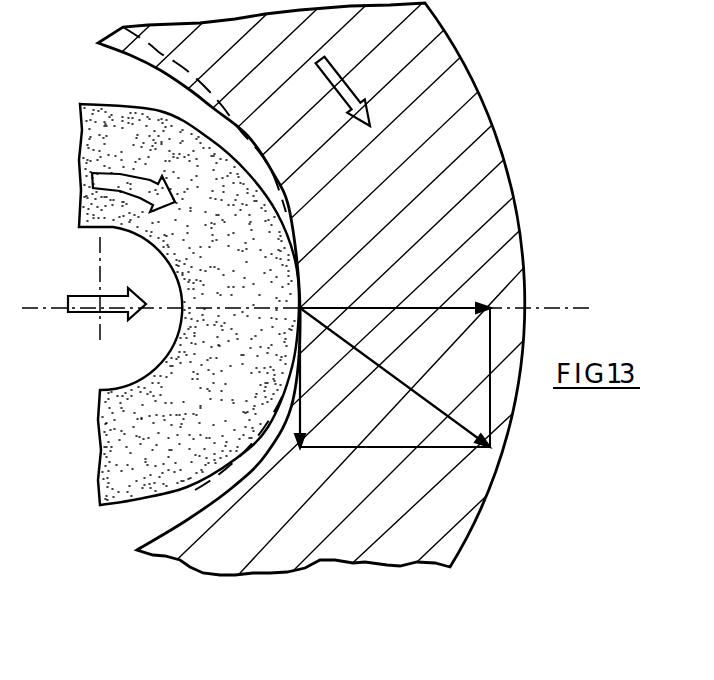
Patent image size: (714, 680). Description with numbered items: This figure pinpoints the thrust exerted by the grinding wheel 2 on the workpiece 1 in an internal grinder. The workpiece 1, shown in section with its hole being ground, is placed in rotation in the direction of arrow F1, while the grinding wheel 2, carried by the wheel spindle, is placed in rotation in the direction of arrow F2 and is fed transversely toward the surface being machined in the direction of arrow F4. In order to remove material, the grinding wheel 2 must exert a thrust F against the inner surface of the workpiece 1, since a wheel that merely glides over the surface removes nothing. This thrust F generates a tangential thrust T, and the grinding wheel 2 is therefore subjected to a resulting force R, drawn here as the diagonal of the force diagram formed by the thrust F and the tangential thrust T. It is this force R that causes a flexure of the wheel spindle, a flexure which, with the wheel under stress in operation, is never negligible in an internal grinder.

The workpiece 1 is at (357, 300).
The grinding wheel 2 is at (170, 304).
The arrow F1 is at (351, 91).
The arrow F2 is at (133, 181).
The arrow F4 is at (112, 291).
The thrust F is at (395, 295).
The tangential thrust T is at (306, 378).
The resulting force R is at (395, 377).